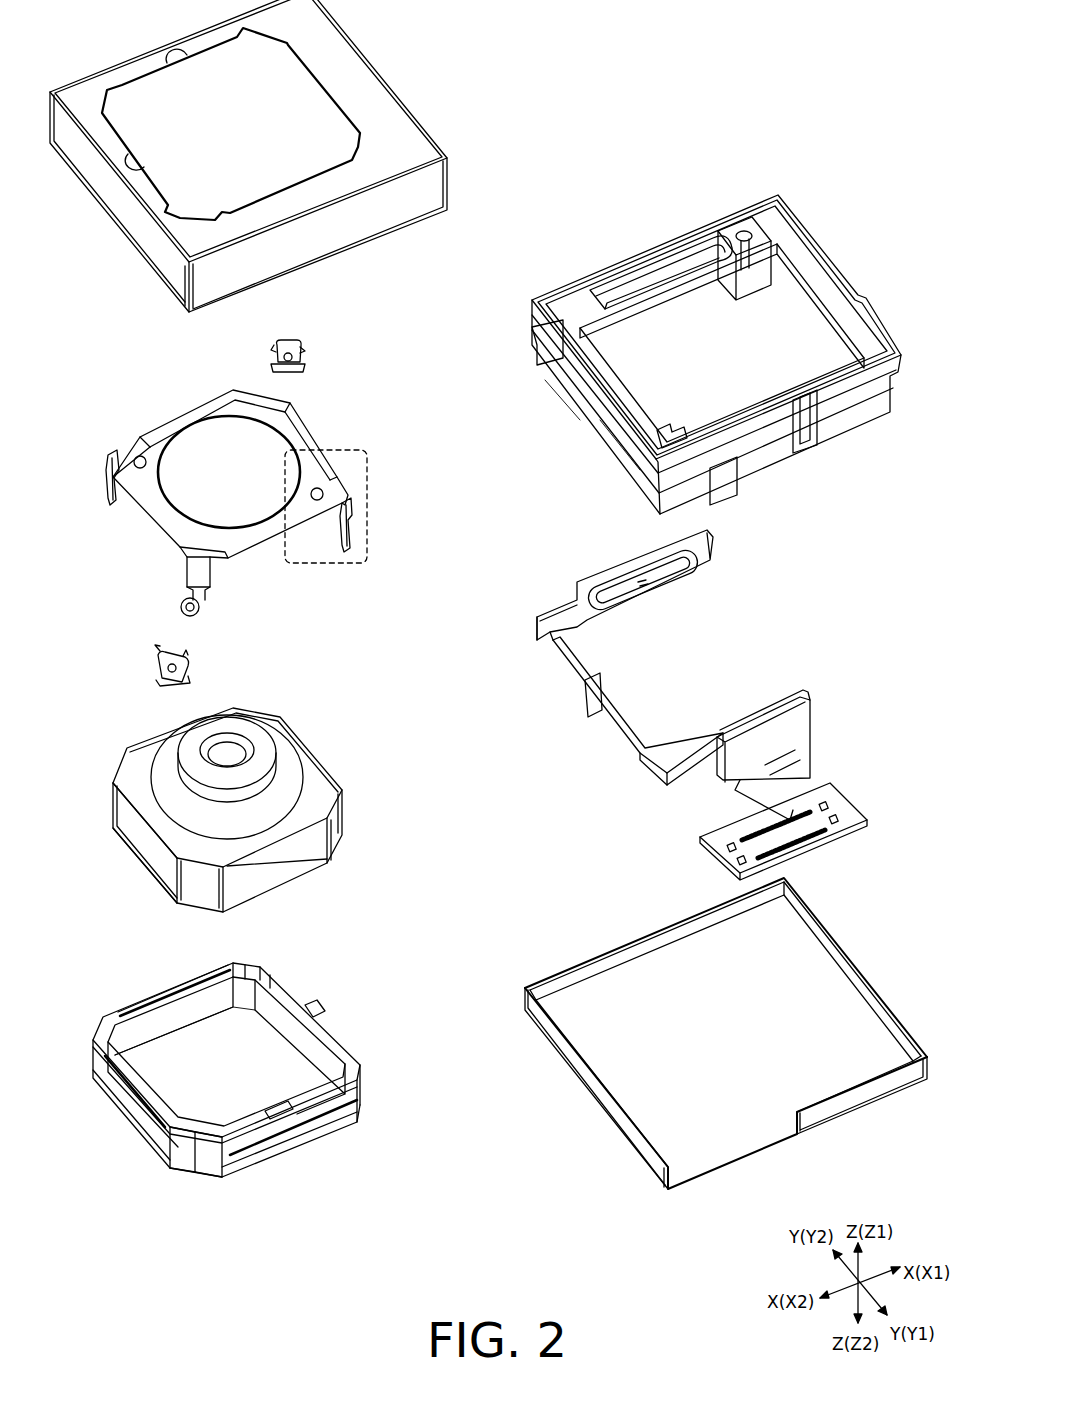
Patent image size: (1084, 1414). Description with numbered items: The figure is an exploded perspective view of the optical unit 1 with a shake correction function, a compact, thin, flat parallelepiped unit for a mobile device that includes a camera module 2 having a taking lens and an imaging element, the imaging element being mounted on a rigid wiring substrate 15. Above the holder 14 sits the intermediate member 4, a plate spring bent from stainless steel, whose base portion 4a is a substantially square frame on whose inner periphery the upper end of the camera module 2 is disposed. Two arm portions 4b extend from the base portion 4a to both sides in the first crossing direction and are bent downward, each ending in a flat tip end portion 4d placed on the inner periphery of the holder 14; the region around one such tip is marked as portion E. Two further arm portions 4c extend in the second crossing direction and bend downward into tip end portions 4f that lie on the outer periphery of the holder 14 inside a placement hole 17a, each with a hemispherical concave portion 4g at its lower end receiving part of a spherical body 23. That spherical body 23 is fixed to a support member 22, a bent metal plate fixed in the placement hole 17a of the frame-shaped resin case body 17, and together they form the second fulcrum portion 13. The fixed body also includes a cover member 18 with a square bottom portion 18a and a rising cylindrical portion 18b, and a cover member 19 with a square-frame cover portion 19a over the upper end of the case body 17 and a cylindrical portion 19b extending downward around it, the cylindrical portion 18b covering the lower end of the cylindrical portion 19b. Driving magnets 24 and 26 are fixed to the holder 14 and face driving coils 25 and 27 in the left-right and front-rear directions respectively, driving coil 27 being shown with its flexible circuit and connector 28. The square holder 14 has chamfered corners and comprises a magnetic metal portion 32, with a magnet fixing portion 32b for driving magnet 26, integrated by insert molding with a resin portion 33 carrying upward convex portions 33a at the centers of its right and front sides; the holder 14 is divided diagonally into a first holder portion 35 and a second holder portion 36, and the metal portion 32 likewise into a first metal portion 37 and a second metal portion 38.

The optical unit 1 is at (803, 48).
The camera module 2 is at (340, 813).
The intermediate member 4 is at (264, 498).
The base portion 4a is at (193, 407).
The arm portion 4b is at (264, 503).
The arm portion 4c is at (233, 579).
The tip end portion 4d is at (110, 507).
The tip end portion 4f is at (200, 594).
The concave portion 4g is at (180, 608).
The second fulcrum portion 13 is at (229, 503).
The holder 14 is at (117, 1013).
The wiring substrate 15 is at (140, 860).
The case body 17 is at (716, 340).
The placement hole 17a is at (724, 218).
The cover member 18 is at (726, 1032).
The bottom portion 18a is at (680, 967).
The cylindrical portion 18b is at (726, 1033).
The cover member 19 is at (248, 156).
The cover portion 19a is at (203, 40).
The cylindrical portion 19b is at (405, 232).
The support member 22 is at (258, 492).
The spherical body 23 is at (287, 352).
The driving magnet 24 is at (133, 1117).
The driving coil 25 is at (701, 705).
The driving magnet 26 is at (177, 987).
The driving coil 27 is at (660, 600).
The FPC arm 28 is at (550, 604).
The metal portion 32 is at (185, 1045).
The magnet fixing portion 32b is at (175, 1027).
The resin portion 33 is at (277, 1160).
The convex portion 33a is at (322, 1007).
The first holder portion 35 is at (182, 1180).
The second holder portion 36 is at (208, 1180).
The first metal portion 37 is at (230, 967).
The second metal portion 38 is at (273, 977).
The portion E is at (363, 562).